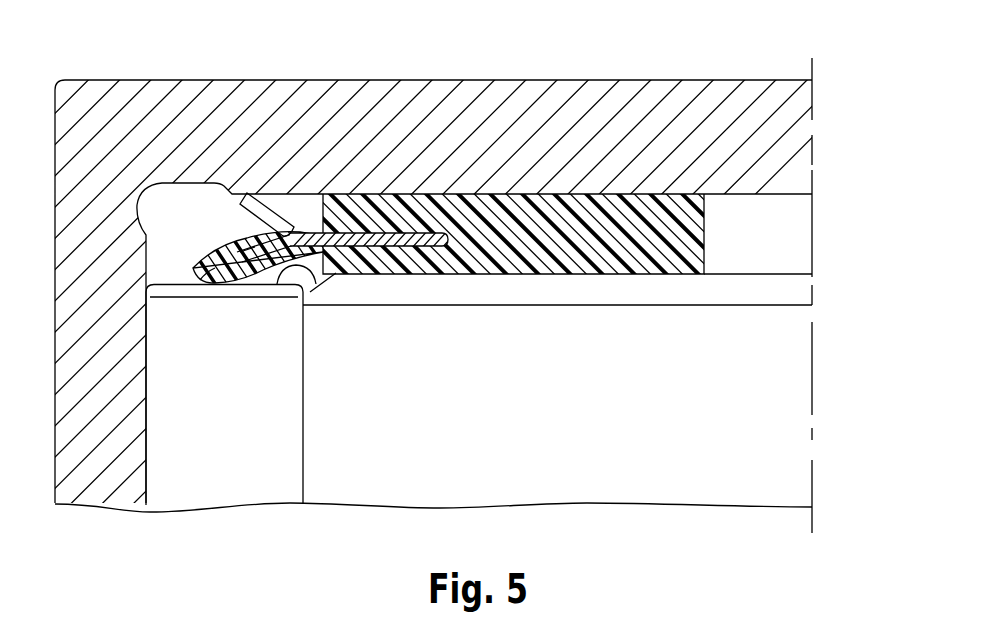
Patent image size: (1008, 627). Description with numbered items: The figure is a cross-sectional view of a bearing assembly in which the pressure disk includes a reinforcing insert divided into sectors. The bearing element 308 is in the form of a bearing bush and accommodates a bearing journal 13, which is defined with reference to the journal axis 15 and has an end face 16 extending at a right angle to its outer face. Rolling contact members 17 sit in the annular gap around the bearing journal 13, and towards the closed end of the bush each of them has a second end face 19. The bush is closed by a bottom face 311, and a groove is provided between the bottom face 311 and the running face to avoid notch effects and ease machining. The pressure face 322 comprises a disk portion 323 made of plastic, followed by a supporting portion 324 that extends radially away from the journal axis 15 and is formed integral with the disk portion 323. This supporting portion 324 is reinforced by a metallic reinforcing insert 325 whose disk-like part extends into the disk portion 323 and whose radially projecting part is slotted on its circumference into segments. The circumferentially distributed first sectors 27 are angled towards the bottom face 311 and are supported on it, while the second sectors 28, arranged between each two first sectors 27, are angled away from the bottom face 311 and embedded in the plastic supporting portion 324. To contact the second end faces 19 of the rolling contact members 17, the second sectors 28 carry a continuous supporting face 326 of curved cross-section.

The bearing element 308 is at (548, 79).
The bearing journal 13 is at (640, 459).
The journal axis 15 is at (812, 365).
The end face 16 is at (753, 270).
The rolling contact members 17 is at (258, 437).
The second end face 19 is at (303, 272).
The first sectors 27 is at (270, 222).
The second sectors 28 is at (244, 240).
The bottom face 311 is at (650, 194).
The pressure face 322 is at (487, 276).
The disk portion 323 is at (570, 240).
The supporting portion 324 is at (260, 272).
The reinforcing insert 325 is at (433, 250).
The supporting face 326 is at (225, 275).